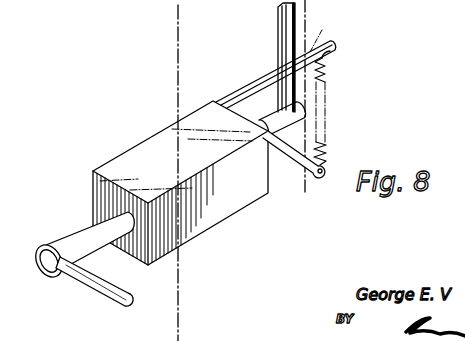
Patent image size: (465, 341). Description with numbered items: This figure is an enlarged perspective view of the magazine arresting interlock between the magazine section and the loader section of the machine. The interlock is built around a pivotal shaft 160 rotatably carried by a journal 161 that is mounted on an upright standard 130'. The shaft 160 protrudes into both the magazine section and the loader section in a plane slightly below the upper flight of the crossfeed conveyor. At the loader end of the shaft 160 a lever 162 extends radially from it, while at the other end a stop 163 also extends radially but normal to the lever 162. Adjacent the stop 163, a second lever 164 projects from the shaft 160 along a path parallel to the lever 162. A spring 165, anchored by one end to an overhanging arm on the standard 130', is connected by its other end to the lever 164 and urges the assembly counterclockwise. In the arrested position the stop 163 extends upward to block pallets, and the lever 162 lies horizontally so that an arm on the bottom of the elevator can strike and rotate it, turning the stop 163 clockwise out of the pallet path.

The standard 130' is at (162, 173).
The pivotal shaft 160 is at (80, 237).
The journal 161 is at (138, 155).
The lever 162 is at (92, 292).
The stop 163 is at (277, 38).
The lever 164 is at (296, 166).
The spring 165 is at (325, 151).